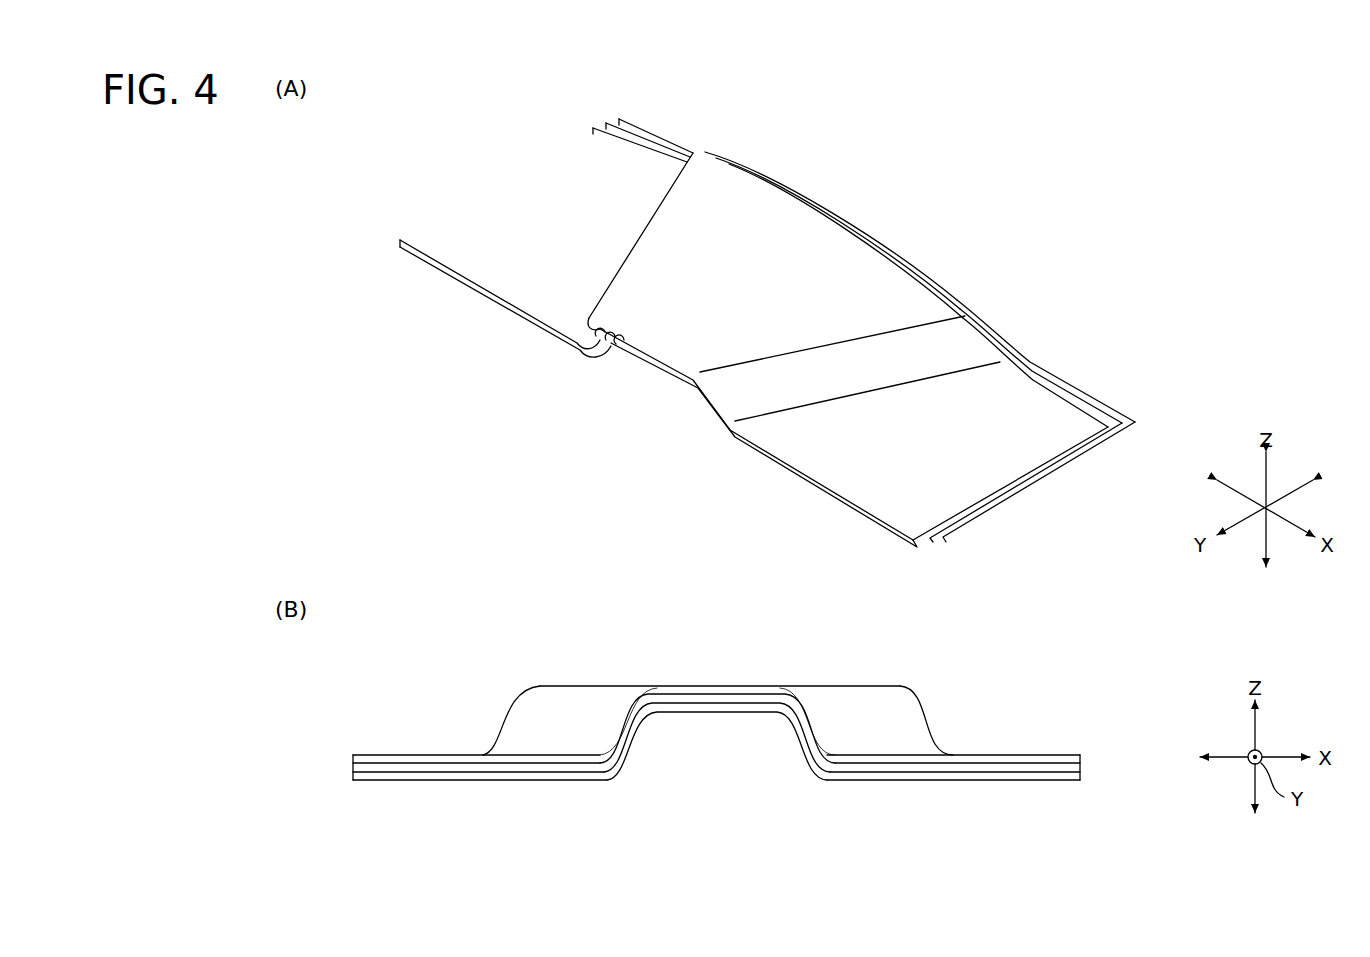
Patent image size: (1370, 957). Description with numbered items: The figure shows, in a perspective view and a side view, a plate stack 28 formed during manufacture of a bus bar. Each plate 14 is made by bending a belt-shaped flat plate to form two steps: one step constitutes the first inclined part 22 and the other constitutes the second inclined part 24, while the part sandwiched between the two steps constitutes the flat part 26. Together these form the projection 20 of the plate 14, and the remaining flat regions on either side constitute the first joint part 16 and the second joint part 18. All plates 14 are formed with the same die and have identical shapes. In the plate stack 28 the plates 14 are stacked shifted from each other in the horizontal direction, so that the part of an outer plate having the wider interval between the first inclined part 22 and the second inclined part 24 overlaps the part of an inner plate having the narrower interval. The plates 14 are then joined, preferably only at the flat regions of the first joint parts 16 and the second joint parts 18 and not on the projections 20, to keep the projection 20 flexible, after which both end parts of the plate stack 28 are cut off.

In FIG. 4A, the plate 14 is at (1105, 420).
In FIG. 4B, the plate 14 is at (1082, 758).
In FIG. 4A, the first joint part 16 is at (840, 505).
In FIG. 4B, the first joint part 16 is at (1045, 755).
In FIG. 4A, the second joint part 18 is at (451, 280).
In FIG. 4B, the second joint part 18 is at (412, 754).
In FIG. 4A, the projection 20 is at (637, 357).
In FIG. 4B, the projection 20 is at (821, 684).
In FIG. 4A, the first inclined part 22 is at (963, 322).
In FIG. 4B, the first inclined part 22 is at (904, 700).
In FIG. 4A, the second inclined part 24 is at (693, 152).
In FIG. 4B, the second inclined part 24 is at (530, 700).
In FIG. 4A, the flat part 26 is at (823, 240).
In FIG. 4B, the flat part 26 is at (720, 686).
In FIG. 4A, the plate stack 28 is at (628, 500).
In FIG. 4B, the plate stack 28 is at (703, 848).